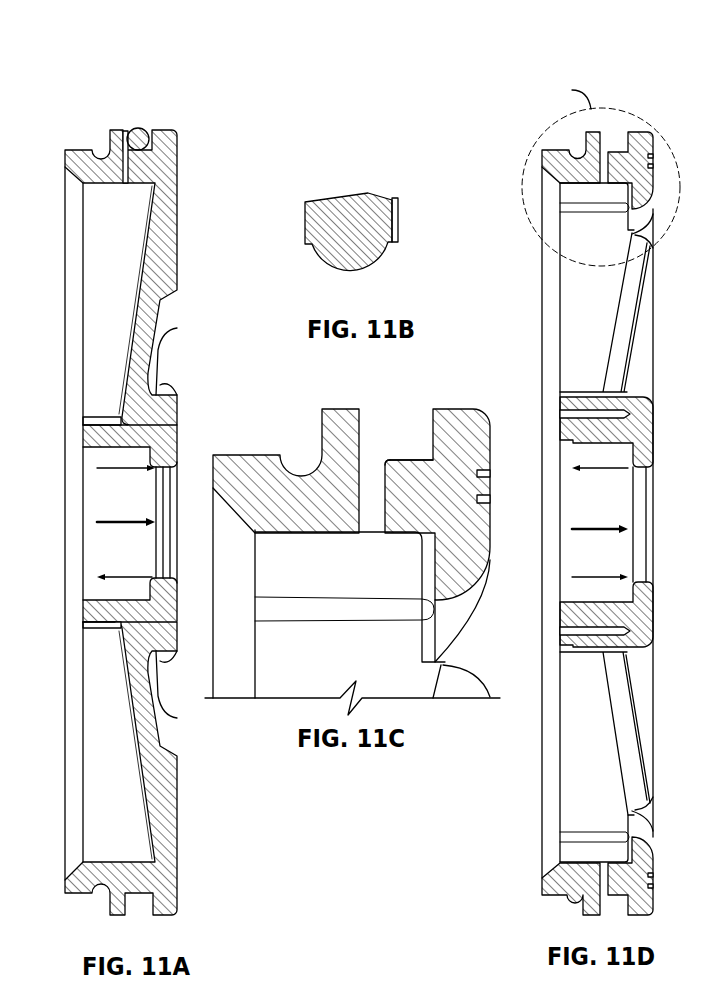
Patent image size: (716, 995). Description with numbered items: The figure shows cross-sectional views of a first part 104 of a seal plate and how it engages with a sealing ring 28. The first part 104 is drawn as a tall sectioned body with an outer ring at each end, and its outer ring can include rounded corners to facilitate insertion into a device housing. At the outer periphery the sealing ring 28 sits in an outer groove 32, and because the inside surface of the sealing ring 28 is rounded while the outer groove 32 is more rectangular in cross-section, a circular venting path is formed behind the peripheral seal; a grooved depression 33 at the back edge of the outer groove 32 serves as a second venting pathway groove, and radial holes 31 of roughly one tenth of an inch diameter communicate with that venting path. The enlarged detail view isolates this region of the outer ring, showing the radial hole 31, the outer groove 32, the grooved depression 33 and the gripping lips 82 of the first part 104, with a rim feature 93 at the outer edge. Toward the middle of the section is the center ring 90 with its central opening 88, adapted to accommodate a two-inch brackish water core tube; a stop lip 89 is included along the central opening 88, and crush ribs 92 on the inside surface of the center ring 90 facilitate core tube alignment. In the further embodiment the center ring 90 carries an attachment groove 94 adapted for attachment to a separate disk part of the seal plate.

In FIG. 11A, the first part 104 is at (92, 98).
In FIG. 11D, the first part 104 is at (641, 80).
In FIG. 11A, the sealing ring 28 is at (144, 119).
In FIG. 11B, the sealing ring 28 is at (408, 229).
In FIG. 11A, the center ring 90 is at (170, 421).
In FIG. 11D, the center ring 90 is at (644, 420).
In FIG. 11A, the stop lip 89 is at (152, 474).
In FIG. 11A, the crush ribs 92 is at (124, 582).
In FIG. 11C, the radial hole 31 is at (374, 480).
In FIG. 11C, the outer groove 32 is at (387, 440).
In FIG. 11C, the grooved depression 33 is at (385, 457).
In FIG. 11C, the rim 93 is at (470, 449).
In FIG. 11C, the gripping lips 82 is at (473, 545).
In FIG. 11D, the gripping lips 82 is at (641, 177).
In FIG. 11D, the attachment groove 94 is at (563, 412).
In FIG. 11D, the central opening 88 is at (664, 537).